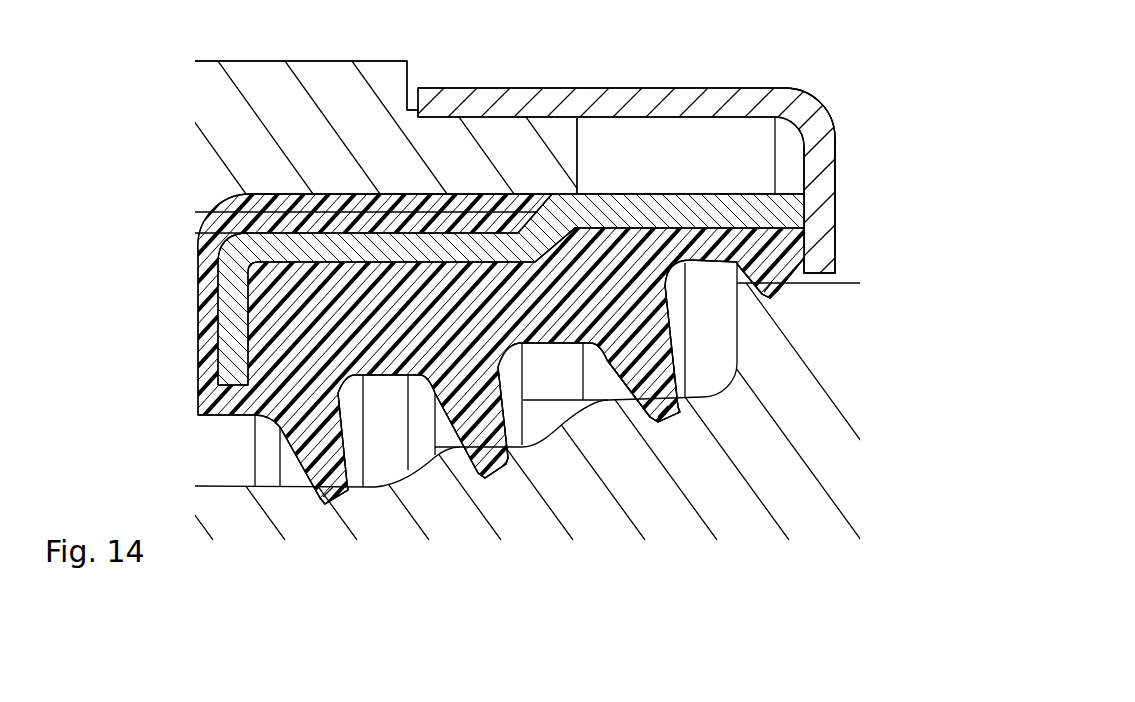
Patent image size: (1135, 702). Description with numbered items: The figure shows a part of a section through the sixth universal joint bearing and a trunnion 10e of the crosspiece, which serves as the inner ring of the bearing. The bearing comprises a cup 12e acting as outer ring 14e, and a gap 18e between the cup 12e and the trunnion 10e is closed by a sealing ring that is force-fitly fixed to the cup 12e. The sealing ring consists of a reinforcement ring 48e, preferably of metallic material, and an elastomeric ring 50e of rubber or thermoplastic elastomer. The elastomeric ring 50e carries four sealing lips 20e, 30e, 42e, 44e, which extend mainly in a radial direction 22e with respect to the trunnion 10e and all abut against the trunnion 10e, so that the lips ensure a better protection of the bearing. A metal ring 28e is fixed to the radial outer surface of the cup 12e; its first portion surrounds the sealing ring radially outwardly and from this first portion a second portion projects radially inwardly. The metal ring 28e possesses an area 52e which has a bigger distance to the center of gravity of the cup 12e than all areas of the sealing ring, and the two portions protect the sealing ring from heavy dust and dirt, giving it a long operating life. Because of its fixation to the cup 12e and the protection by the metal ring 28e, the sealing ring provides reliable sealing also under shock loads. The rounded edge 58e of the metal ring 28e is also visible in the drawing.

The trunnion 10e is at (667, 489).
The cup 12e is at (287, 80).
The outer ring 14e is at (287, 80).
The gap 18e is at (565, 394).
The first sealing lip 20e is at (653, 380).
The radial direction 22e is at (915, 340).
The metal ring 28e is at (530, 100).
The second sealing lip 30e is at (492, 448).
The sealing lip 42e is at (770, 287).
The sealing lip 44e is at (335, 478).
The reinforcement ring 48e is at (725, 208).
The elastomeric ring 50e is at (627, 223).
The area 52e is at (803, 103).
The rounded edge 58e is at (822, 170).